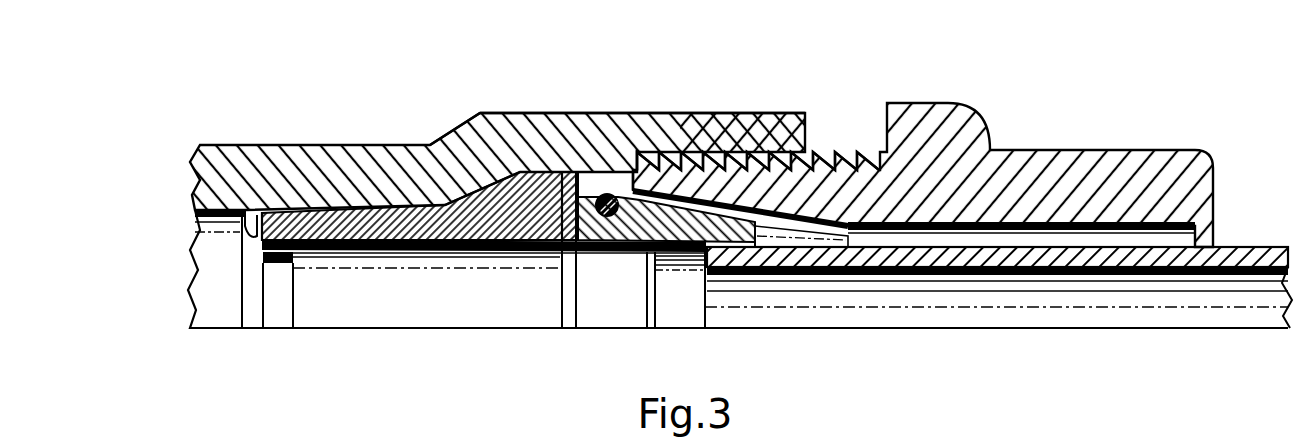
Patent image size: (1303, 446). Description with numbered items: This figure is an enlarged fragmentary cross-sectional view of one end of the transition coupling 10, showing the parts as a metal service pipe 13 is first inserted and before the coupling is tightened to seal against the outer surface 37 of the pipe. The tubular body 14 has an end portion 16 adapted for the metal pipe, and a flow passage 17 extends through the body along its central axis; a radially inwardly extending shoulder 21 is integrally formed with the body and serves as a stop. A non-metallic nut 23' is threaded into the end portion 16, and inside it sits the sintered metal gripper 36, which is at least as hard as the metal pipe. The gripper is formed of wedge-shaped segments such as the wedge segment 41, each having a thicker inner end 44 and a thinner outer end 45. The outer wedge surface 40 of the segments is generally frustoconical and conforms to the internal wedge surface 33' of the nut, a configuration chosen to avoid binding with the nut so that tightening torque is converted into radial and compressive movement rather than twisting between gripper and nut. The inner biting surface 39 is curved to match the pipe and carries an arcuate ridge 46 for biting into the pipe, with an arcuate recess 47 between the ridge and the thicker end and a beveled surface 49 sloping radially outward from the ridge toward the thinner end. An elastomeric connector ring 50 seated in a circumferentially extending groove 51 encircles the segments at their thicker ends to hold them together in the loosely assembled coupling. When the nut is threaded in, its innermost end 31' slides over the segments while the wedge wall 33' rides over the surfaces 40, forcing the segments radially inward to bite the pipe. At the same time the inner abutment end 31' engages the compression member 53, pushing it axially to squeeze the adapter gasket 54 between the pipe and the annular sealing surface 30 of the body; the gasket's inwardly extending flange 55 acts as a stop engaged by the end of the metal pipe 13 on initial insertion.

The transition coupling 10 is at (465, 84).
The metal service pipe 13 is at (1265, 247).
The tubular body 14 is at (300, 145).
The end portion 16 is at (650, 150).
The flow passage 17 is at (226, 308).
The shoulder 21 is at (238, 232).
The nut 23' is at (923, 153).
The annular sealing surface 30 is at (466, 200).
The innermost end of the nut 31' is at (637, 115).
The internal wedge surface 33' is at (914, 159).
The gripper 36 is at (622, 250).
The outer surface of the metal pipe 37 is at (1015, 250).
The inner biting surface 39 is at (672, 262).
The outer wedge surface 40 is at (700, 150).
The wedge segment 41 is at (783, 150).
The thicker inner end 44 is at (548, 253).
The thinner outer end 45 is at (735, 240).
The arcuate ridge 46 is at (648, 255).
The arcuate recess 47 is at (585, 255).
The beveled surface 49 is at (696, 265).
The connector ring 50 is at (604, 196).
The circumferentially extending groove 51 is at (566, 172).
The compression member 53 is at (526, 113).
The adapter gasket 54 is at (352, 253).
The inwardly extending flange 55 is at (266, 263).